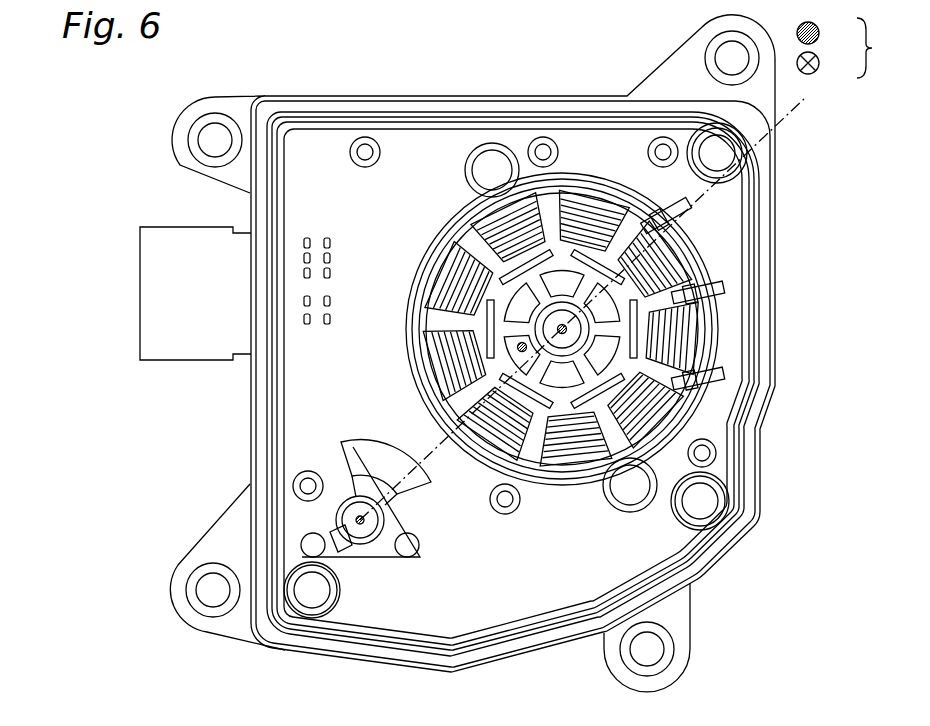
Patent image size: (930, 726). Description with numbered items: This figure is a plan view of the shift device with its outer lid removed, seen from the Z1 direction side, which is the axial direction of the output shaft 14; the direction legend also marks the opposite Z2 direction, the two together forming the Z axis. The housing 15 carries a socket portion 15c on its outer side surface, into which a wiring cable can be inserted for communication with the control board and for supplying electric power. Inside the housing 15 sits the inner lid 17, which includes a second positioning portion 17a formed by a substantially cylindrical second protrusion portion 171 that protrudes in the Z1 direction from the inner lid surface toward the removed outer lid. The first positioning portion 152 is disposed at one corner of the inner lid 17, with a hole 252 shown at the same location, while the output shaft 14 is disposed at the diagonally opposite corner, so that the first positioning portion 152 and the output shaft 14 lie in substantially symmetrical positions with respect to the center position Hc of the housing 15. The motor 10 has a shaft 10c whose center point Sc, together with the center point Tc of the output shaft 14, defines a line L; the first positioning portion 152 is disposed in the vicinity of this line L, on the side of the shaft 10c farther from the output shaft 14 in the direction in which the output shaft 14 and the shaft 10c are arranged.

The housing 15 is at (511, 92).
The socket portion 15c is at (161, 230).
The inner lid 17 is at (405, 107).
The second positioning portion 17a is at (361, 143).
The second protrusion portion 171 is at (364, 168).
The first positioning portion 152 is at (656, 140).
The hole 252 is at (647, 152).
The motor 10 is at (403, 281).
The shaft 10c is at (571, 415).
The center point Sc is at (567, 330).
The center position Hc is at (517, 348).
The line L is at (430, 455).
The center point Tc is at (375, 520).
The output shaft 14 is at (360, 548).
The Z1 direction Z1 is at (824, 34).
The direction Z2 is at (824, 64).
The axis Z is at (874, 48).